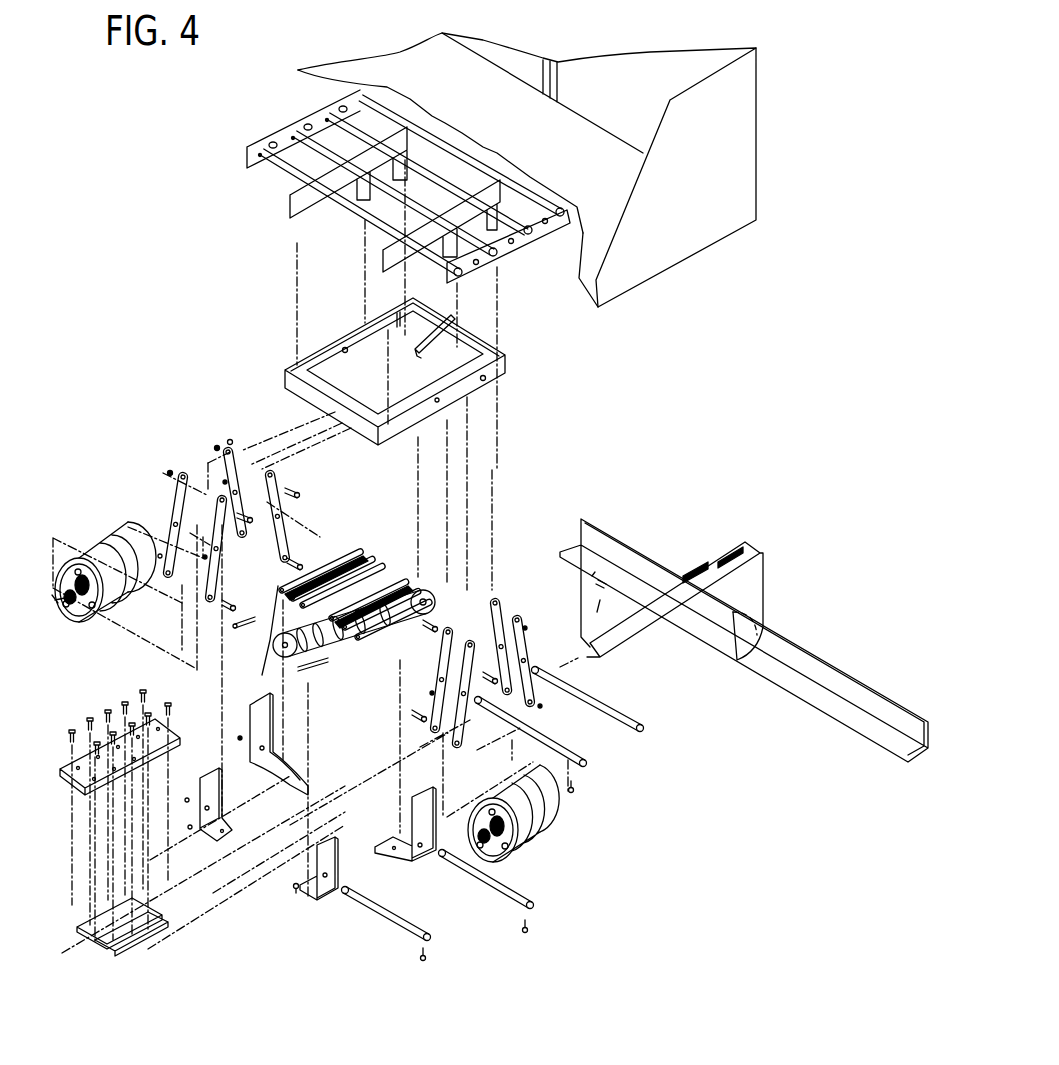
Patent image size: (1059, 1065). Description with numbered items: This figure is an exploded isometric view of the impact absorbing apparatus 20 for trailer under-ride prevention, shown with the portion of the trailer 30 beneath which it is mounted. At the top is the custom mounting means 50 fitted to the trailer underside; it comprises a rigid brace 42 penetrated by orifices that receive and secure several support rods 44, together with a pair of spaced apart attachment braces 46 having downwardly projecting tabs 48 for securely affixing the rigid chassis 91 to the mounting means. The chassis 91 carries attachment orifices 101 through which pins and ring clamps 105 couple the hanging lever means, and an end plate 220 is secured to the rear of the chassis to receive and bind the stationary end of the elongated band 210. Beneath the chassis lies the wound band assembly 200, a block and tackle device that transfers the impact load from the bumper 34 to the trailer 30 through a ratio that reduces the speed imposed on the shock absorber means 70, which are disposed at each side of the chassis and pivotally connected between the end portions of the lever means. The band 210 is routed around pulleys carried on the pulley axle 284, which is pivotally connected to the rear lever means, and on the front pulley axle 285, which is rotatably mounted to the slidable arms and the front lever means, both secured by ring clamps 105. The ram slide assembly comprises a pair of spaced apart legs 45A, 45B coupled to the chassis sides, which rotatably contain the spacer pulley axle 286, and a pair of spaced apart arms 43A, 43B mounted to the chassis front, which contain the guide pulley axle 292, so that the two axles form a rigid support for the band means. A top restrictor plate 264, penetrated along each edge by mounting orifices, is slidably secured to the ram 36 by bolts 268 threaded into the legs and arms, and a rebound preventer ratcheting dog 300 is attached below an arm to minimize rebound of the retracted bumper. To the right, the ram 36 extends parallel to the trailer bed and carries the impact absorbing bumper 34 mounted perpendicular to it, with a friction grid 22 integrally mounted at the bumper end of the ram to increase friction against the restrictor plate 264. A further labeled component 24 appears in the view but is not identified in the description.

The impact absorbing apparatus 20 is at (97, 175).
The friction grid 22 is at (690, 568).
The roller 24 is at (288, 660).
The trailer 30 is at (740, 268).
The impact absorbing bumper 34 is at (765, 598).
The ram 36 is at (672, 655).
The rigid brace 42 is at (280, 130).
The support rods 44 is at (345, 213).
The attachment braces 46 is at (383, 268).
The downwardly projecting tabs 48 is at (290, 218).
The custom mounting means 50 is at (240, 193).
The shock absorber means 70 is at (108, 505).
The rigid chassis 91 is at (530, 357).
The attachment orifices 101 is at (345, 347).
The ring clamp 105 is at (575, 794).
The wound band assembly 200 is at (390, 540).
The elongated band 210 is at (310, 578).
The end plate 220 is at (455, 318).
The top restrictor plate 264 is at (82, 760).
The bolts 268 is at (143, 692).
The pulley axle 284 is at (625, 724).
The front pulley axle 285 is at (582, 766).
The spacer pulley axle 286 is at (490, 890).
The guide pulley axle 292 is at (387, 918).
The rebound preventer ratcheting dog 300 is at (304, 890).
The arm 43A is at (335, 858).
The arm 43B is at (200, 785).
The leg 45A is at (423, 852).
The leg 45B is at (253, 727).